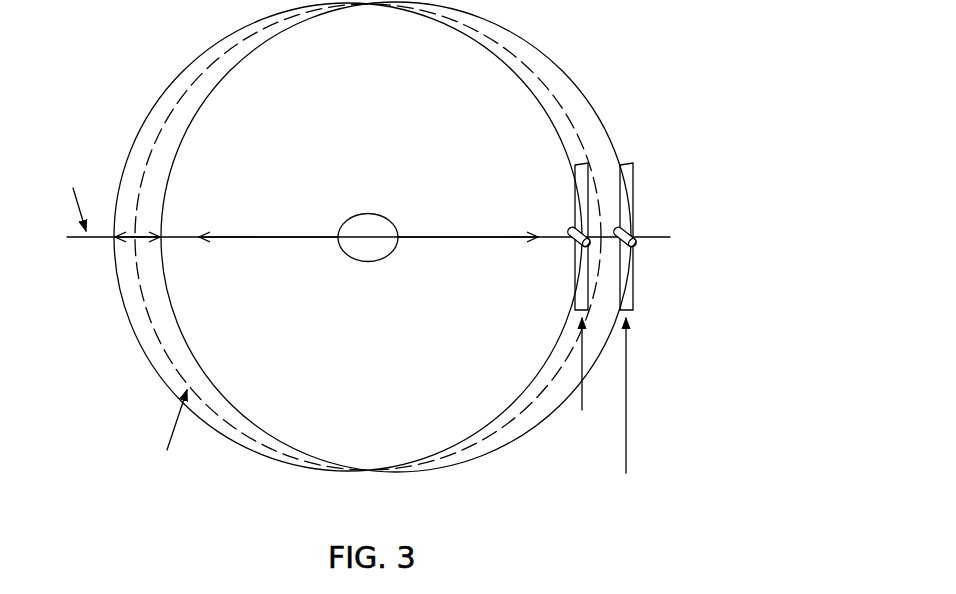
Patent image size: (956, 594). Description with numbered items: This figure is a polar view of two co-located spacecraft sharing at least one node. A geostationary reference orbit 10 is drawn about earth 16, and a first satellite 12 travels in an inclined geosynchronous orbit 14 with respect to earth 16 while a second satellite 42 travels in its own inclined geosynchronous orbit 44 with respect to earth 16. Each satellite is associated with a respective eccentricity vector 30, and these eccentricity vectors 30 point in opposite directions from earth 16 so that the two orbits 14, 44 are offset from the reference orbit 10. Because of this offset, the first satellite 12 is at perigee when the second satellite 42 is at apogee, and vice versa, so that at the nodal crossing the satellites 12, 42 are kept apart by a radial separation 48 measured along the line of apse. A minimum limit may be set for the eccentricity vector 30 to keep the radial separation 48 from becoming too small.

The reference orbit 10 is at (576, 130).
The first spacecraft or satellite 12 is at (572, 244).
The inclined geosynchronous orbit 14 is at (506, 408).
The earth 16 is at (371, 261).
The eccentricity vector 30 is at (266, 237).
The second spacecraft or satellite 42 is at (637, 228).
The inclined geosynchronous orbit 44 is at (554, 68).
The radial separation 48 is at (128, 241).